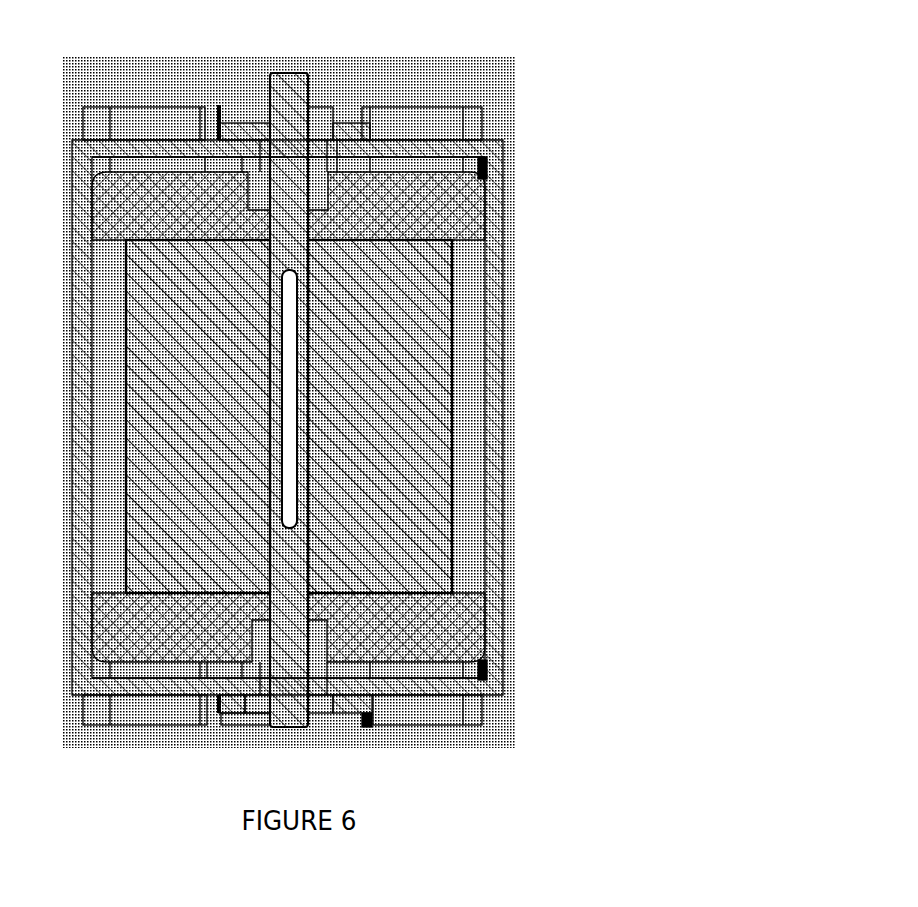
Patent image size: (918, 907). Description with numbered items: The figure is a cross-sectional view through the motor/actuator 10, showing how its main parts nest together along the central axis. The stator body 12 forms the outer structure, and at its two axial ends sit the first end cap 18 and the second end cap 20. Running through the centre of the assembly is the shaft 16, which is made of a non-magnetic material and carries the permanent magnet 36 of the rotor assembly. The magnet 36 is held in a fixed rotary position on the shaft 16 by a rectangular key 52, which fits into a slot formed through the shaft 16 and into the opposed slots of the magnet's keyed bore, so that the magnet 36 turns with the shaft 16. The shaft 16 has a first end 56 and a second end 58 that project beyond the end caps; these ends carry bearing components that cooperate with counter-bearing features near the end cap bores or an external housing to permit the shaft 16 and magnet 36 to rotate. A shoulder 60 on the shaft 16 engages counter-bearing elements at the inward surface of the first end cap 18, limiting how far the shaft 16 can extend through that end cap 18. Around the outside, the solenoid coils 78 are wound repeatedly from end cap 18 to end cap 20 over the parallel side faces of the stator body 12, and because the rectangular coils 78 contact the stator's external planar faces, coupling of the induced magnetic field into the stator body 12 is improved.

The motor/actuator 10 is at (785, 640).
The stator body 12 is at (474, 392).
The shaft 16 is at (327, 335).
The first end cap 18 is at (470, 210).
The second end cap 20 is at (467, 625).
The permanent magnet 36 is at (433, 443).
The rectangular key 52 is at (298, 372).
The first end 56 is at (261, 384).
The second end 58 is at (263, 715).
The shoulder 60 is at (255, 174).
The solenoid coil 78 is at (503, 140).